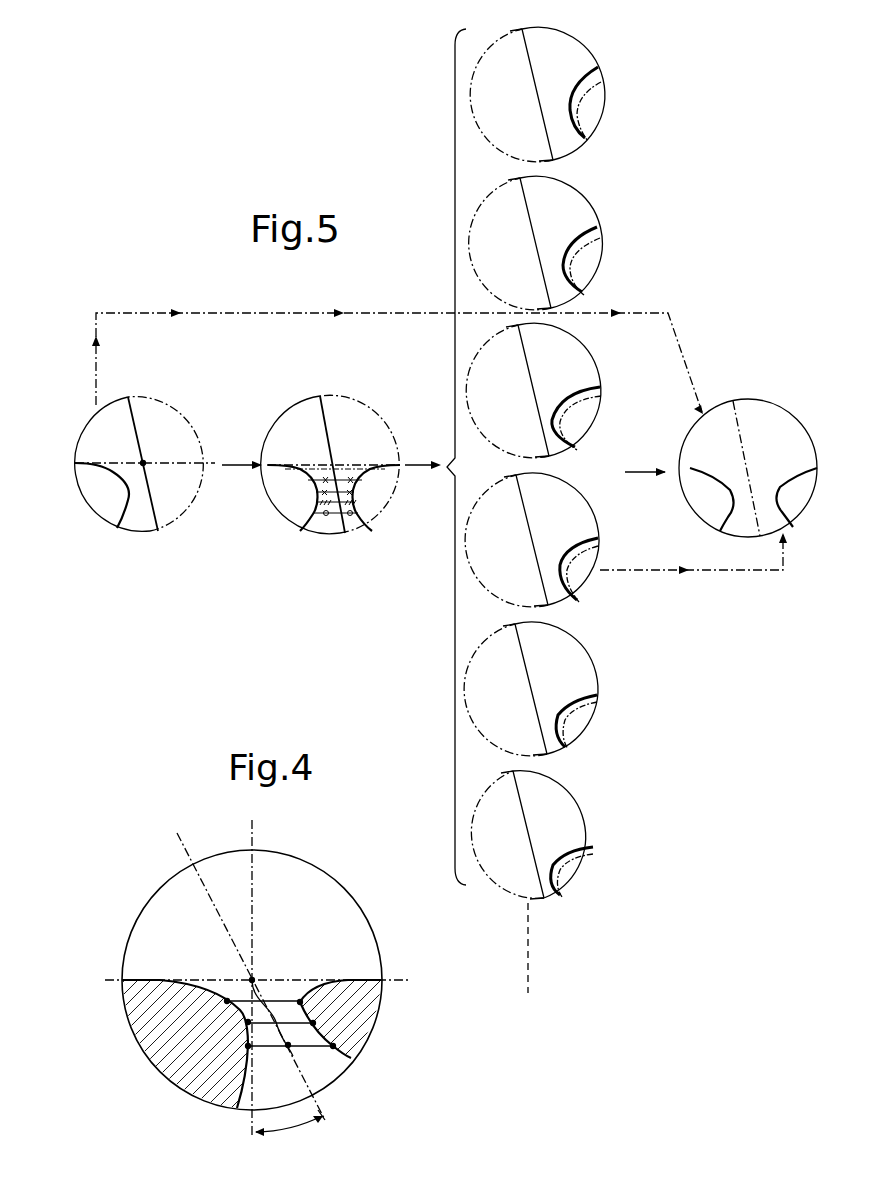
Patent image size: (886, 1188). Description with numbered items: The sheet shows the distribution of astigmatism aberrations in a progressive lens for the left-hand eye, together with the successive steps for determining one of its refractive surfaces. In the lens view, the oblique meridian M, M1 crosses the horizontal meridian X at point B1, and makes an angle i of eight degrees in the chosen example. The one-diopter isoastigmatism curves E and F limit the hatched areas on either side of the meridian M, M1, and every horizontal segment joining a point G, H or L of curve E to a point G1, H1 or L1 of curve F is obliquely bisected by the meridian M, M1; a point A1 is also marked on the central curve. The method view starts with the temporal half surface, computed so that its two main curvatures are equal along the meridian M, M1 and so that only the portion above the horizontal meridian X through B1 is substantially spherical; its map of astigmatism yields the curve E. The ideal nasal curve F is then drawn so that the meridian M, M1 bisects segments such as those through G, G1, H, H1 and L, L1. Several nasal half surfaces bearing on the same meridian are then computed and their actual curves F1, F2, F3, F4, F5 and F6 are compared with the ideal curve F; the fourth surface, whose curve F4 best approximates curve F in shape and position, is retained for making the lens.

In FIG. 5, the meridian M is at (128, 397).
In FIG. 4, the meridian M is at (250, 967).
In FIG. 5, the meridian M1 is at (760, 536).
In FIG. 4, the meridian M1 is at (335, 1124).
In FIG. 5, the isoastigmatism curve F is at (380, 466).
In FIG. 4, the isoastigmatism curve F is at (341, 1056).
In FIG. 5, the isoastigmatism curve F1 is at (596, 72).
In FIG. 5, the isoastigmatism curve F2 is at (594, 232).
In FIG. 5, the isoastigmatism curve F3 is at (590, 385).
In FIG. 5, the isoastigmatism curve F4 is at (594, 538).
In FIG. 5, the isoastigmatism curve F5 is at (600, 724).
In FIG. 5, the isoastigmatism curve F6 is at (582, 850).
In FIG. 5, the isoastigmatism curve E is at (120, 515).
In FIG. 4, the isoastigmatism curve E is at (228, 1087).
In FIG. 5, the horizontal meridian X is at (237, 447).
In FIG. 4, the horizontal meridian X is at (260, 969).
In FIG. 5, the point B1 is at (144, 460).
In FIG. 4, the point B1 is at (254, 978).
In FIG. 4, the point G is at (227, 999).
In FIG. 4, the point G1 is at (300, 1000).
In FIG. 4, the point H is at (248, 1021).
In FIG. 4, the point H1 is at (313, 1023).
In FIG. 4, the point L is at (248, 1046).
In FIG. 4, the point L1 is at (333, 1046).
In FIG. 4, the point A1 is at (288, 1047).
In FIG. 4, the angle i is at (289, 1135).